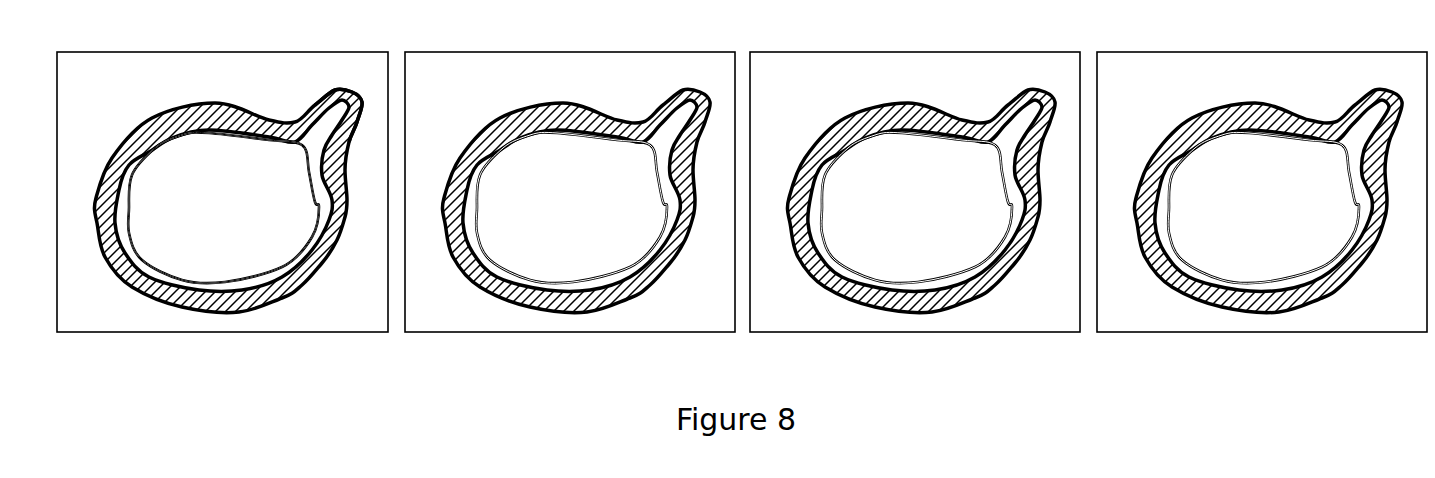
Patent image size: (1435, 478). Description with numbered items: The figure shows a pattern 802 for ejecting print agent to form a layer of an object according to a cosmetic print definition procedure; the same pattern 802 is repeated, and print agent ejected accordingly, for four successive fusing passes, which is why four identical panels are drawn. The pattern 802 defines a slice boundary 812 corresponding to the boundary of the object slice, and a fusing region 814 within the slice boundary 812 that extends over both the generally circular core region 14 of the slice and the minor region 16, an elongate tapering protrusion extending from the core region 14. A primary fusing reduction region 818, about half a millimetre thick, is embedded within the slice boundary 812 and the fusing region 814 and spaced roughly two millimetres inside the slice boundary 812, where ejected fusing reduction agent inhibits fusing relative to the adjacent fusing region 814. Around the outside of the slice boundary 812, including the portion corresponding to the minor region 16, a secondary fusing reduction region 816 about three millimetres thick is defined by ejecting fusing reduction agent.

The pattern 802 is at (309, 24).
The slice boundary 812 is at (103, 133).
The fusing region 814 is at (108, 227).
The secondary fusing reduction region 816 is at (183, 109).
The primary fusing reduction region 818 is at (176, 135).
The core region 14 is at (228, 222).
The minor region 16 is at (350, 133).